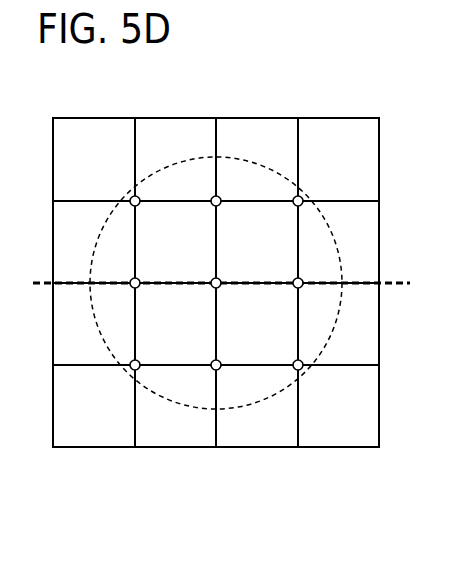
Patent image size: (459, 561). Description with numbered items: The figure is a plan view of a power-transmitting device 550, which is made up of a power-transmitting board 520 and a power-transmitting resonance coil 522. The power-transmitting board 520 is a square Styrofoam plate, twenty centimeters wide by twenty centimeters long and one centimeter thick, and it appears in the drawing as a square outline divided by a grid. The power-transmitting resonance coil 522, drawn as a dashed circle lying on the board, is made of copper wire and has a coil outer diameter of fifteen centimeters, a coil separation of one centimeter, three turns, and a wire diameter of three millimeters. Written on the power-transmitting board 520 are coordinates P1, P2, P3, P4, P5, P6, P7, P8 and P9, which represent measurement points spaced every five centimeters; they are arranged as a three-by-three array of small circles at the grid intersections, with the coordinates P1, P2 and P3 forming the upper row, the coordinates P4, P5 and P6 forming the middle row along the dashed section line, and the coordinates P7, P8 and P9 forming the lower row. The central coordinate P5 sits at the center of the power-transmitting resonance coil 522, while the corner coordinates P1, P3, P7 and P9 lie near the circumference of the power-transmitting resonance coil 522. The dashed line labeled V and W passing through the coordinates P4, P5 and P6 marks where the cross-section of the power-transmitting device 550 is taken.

The power-transmitting device 550 is at (239, 98).
The power-transmitting board 520 is at (366, 431).
The power-transmitting resonance coil 522 is at (230, 407).
The coordinate P1 is at (151, 191).
The coordinate P2 is at (232, 191).
The coordinate P3 is at (314, 191).
The coordinate P4 is at (151, 270).
The coordinate P5 is at (232, 270).
The coordinate P6 is at (314, 270).
The coordinate P7 is at (151, 353).
The coordinate P8 is at (232, 353).
The coordinate P9 is at (314, 353).